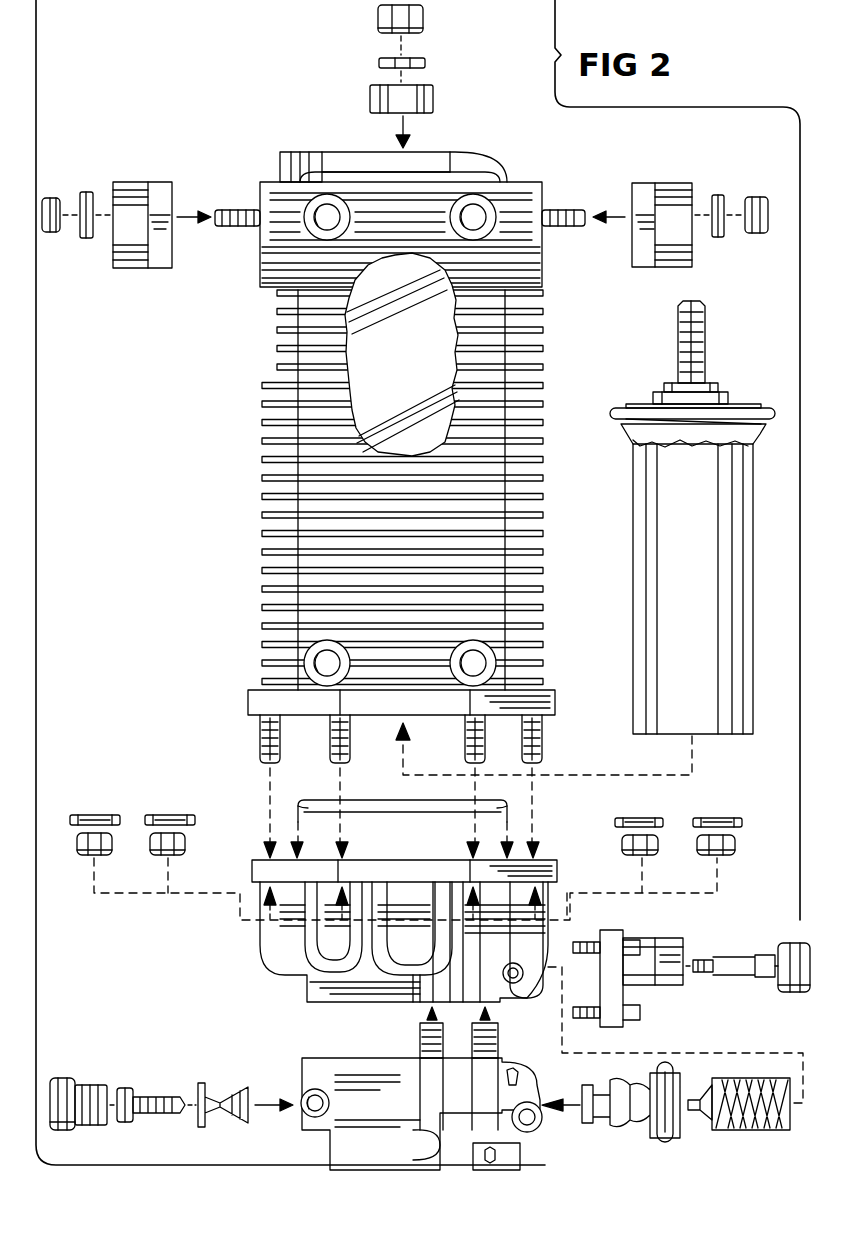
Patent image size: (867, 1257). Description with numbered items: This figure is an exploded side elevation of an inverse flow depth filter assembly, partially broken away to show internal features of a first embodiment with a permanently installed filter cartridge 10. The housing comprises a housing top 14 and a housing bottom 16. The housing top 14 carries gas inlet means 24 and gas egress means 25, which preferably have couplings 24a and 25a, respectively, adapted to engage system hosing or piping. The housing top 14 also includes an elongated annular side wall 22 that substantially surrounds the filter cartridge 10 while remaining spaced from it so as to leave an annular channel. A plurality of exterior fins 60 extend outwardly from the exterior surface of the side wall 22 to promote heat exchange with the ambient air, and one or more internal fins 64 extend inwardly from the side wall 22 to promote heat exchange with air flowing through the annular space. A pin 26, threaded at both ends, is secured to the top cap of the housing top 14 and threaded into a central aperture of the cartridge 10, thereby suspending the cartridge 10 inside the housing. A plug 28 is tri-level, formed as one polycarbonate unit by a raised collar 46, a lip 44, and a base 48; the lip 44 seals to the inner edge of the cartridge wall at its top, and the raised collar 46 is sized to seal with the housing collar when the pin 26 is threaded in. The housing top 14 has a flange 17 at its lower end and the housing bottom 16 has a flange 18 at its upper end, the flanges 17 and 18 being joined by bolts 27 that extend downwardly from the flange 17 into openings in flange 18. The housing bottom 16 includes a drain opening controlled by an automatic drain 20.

The filter cartridge 10 is at (628, 535).
The housing top 14 is at (444, 152).
The housing bottom 16 is at (260, 965).
The flange 17 is at (558, 703).
The flange 18 is at (559, 870).
The automatic drain 20 is at (302, 1062).
The side wall 22 is at (293, 375).
The gas inlet means 24 is at (224, 211).
The coupling 24a is at (136, 181).
The gas egress means 25 is at (575, 209).
The coupling 25a is at (676, 183).
The pin 26 is at (706, 322).
The bolts 27 is at (545, 748).
The plug 28 is at (720, 385).
The lip 44 is at (622, 406).
The raised collar 46 is at (652, 396).
The base 48 is at (622, 426).
The exterior fins 60 is at (545, 312).
The internal fins 64 is at (392, 290).